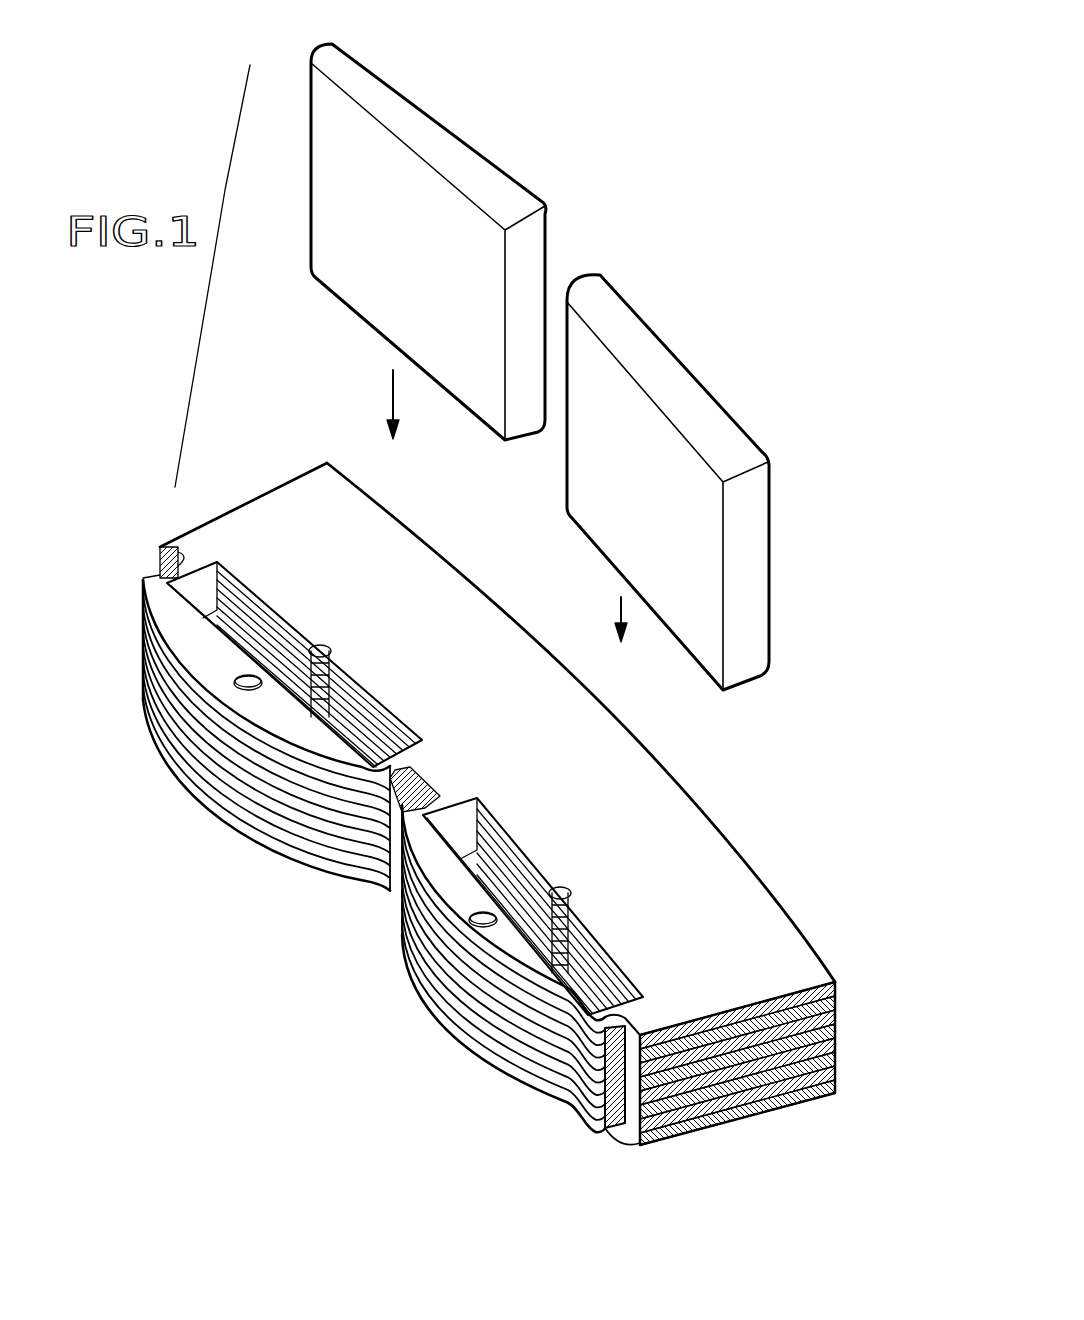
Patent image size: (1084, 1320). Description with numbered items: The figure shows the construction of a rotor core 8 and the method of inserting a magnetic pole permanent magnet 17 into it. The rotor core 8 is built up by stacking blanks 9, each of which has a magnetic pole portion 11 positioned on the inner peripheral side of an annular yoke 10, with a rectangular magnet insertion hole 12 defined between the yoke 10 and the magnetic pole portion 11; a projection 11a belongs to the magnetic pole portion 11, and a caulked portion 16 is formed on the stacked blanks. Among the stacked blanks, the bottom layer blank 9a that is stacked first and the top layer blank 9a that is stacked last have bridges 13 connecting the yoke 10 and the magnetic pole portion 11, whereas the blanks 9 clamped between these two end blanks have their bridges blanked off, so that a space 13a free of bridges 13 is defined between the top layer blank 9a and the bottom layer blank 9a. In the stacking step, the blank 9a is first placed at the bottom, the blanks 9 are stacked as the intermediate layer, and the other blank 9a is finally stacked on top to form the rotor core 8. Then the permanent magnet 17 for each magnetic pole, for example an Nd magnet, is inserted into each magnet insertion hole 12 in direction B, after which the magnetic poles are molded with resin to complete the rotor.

The rotor core 8 is at (770, 813).
The blank 9 is at (836, 1005).
The bottom layer blank / top layer blank 9a is at (837, 984).
The yoke 10 is at (740, 920).
The magnetic pole portion 11 is at (327, 753).
The projection 11a is at (150, 580).
The magnet insertion hole 12 is at (217, 560).
The bridge 13 is at (170, 548).
The space 13a is at (415, 768).
The caulked portion 16 is at (235, 683).
The permanent magnet 17 is at (463, 142).